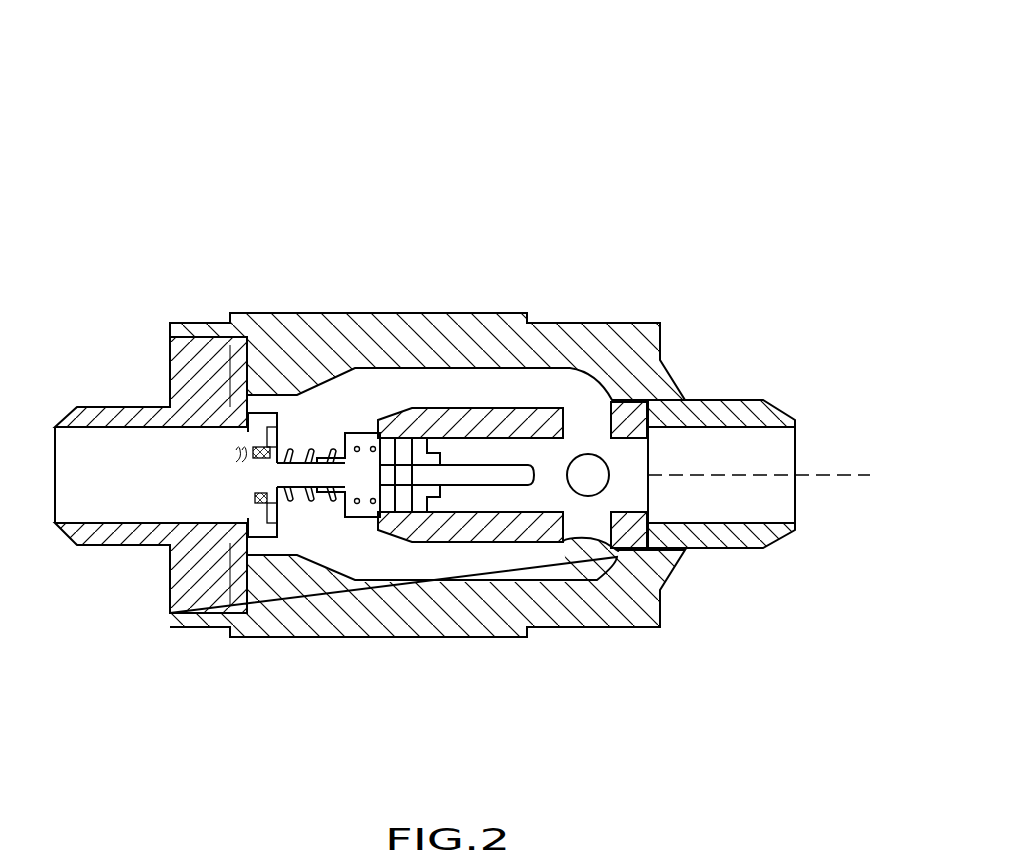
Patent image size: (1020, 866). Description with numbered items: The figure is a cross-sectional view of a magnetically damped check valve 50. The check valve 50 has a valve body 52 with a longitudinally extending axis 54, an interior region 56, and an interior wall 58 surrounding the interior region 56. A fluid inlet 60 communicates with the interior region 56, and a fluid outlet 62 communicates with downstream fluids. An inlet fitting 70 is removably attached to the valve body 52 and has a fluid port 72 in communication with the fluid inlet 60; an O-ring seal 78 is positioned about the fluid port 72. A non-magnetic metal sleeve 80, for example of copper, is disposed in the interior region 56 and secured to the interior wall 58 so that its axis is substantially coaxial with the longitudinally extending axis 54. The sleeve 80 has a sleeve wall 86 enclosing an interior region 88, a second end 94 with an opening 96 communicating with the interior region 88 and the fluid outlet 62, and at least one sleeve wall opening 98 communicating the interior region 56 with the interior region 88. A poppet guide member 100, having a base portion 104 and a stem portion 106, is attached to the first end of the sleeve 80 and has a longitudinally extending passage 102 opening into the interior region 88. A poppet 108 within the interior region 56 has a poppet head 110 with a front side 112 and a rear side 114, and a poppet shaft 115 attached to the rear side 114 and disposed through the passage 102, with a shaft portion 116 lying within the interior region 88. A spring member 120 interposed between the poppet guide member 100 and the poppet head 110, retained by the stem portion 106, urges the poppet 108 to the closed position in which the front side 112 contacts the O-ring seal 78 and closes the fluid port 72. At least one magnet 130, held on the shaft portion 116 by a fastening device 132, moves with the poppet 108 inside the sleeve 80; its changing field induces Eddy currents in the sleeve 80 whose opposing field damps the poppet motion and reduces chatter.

The check valve 50 is at (440, 115).
The valve body 52 is at (343, 313).
The longitudinally extending axis 54 is at (818, 475).
The interior region 56 is at (365, 565).
The interior wall 58 is at (525, 368).
The fluid inlet 60 is at (243, 543).
The fluid outlet 62 is at (783, 500).
The inlet fitting 70 is at (193, 367).
The fluid port 72 is at (246, 523).
The O-ring seal 78 is at (230, 402).
The non-magnetic metal sleeve 80 is at (553, 420).
The sleeve wall 86 is at (553, 550).
The interior region 88 is at (514, 560).
The second end 94 is at (650, 433).
The opening 96 is at (637, 490).
The sleeve wall opening 98 is at (590, 498).
The poppet guide member 100 is at (337, 495).
The longitudinally extending passage 102 is at (365, 462).
The base portion 104 is at (358, 433).
The stem portion 106 is at (300, 502).
The poppet 108 is at (243, 447).
The poppet head 110 is at (237, 480).
The front side 112 is at (237, 467).
The rear side 114 is at (285, 433).
The poppet shaft 115 is at (405, 502).
The shaft portion 116 is at (484, 472).
The spring member 120 is at (300, 557).
The magnet 130 is at (413, 560).
The fastening device 132 is at (437, 490).